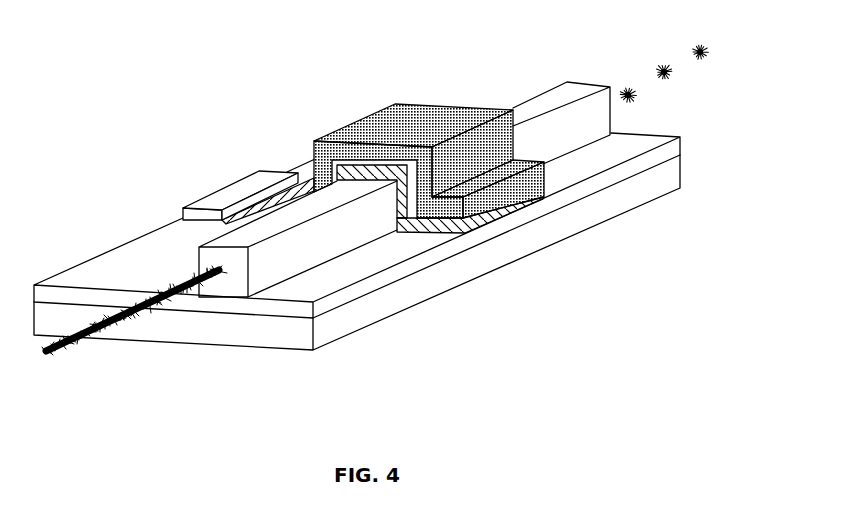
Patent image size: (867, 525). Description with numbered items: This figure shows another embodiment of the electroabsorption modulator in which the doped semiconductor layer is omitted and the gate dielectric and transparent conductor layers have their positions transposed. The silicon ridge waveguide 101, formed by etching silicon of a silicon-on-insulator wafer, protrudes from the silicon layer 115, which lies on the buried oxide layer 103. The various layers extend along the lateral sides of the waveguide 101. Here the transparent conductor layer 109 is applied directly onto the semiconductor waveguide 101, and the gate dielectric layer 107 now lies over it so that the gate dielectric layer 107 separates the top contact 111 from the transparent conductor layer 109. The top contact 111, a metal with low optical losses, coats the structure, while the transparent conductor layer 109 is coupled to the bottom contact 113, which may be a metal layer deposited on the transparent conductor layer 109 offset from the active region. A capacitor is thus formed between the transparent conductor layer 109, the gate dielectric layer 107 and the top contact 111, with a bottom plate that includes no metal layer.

The silicon ridge waveguide 101 is at (557, 100).
The buried oxide layer 103 is at (618, 205).
The gate dielectric layer 107 is at (449, 222).
The transparent conductor layer 109 is at (289, 191).
The top contact 111 is at (389, 143).
The bottom contact 113 is at (223, 199).
The silicon layer 115 is at (652, 161).